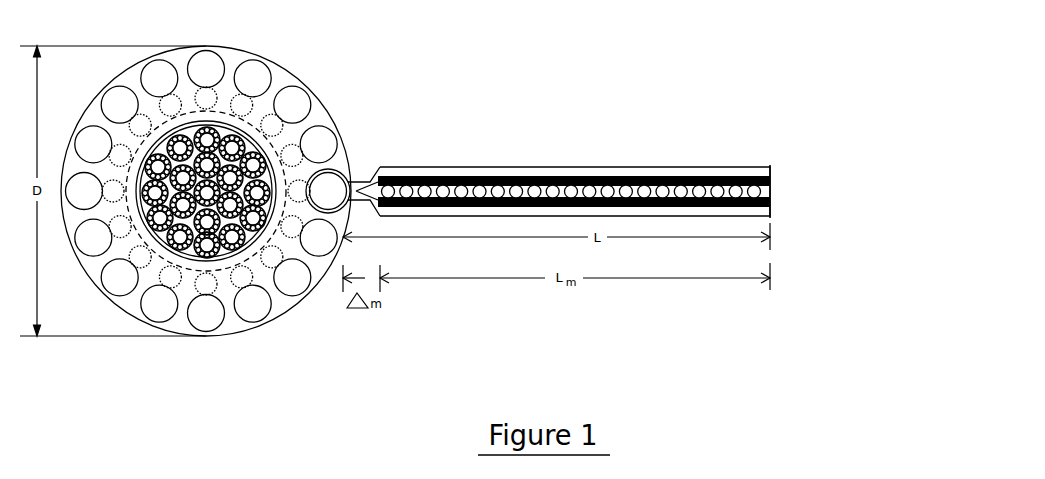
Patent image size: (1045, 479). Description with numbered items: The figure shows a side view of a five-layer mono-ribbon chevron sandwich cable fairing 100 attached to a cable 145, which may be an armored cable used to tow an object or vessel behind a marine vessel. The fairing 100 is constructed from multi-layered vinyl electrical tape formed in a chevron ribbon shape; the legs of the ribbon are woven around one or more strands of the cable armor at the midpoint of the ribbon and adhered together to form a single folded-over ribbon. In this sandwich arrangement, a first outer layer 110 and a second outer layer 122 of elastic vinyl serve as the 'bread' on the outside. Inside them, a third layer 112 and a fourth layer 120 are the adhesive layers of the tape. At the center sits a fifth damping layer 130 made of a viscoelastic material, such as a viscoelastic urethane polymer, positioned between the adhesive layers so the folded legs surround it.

The mono-ribbon sandwich cable fairing 100 is at (498, 134).
The first outer layer 110 is at (776, 167).
The third layer 112 is at (773, 177).
The fourth layer 120 is at (772, 207).
The second outer layer 122 is at (780, 221).
The damping layer 130 is at (780, 190).
The cable 145 is at (204, 72).